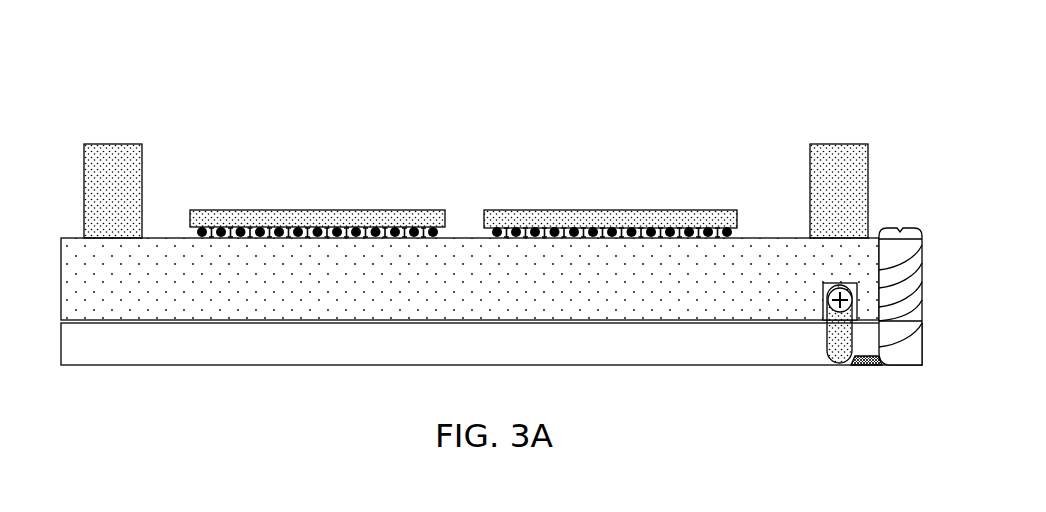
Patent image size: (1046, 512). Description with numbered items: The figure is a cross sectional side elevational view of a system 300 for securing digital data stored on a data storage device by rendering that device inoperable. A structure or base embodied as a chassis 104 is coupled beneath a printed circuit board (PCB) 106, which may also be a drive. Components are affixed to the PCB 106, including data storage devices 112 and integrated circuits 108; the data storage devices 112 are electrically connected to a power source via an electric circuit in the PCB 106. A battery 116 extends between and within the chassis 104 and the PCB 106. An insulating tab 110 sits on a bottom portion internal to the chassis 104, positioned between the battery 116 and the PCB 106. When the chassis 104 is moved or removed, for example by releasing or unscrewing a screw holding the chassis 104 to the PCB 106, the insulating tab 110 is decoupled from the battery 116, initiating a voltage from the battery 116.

The system 300 is at (192, 57).
The chassis 104 is at (122, 353).
The printed circuit board (PCB) 106 is at (122, 303).
The integrated circuits 108 is at (315, 210).
The insulating tab 110 is at (863, 363).
The data storage device 112 is at (112, 144).
The battery 116 is at (825, 345).